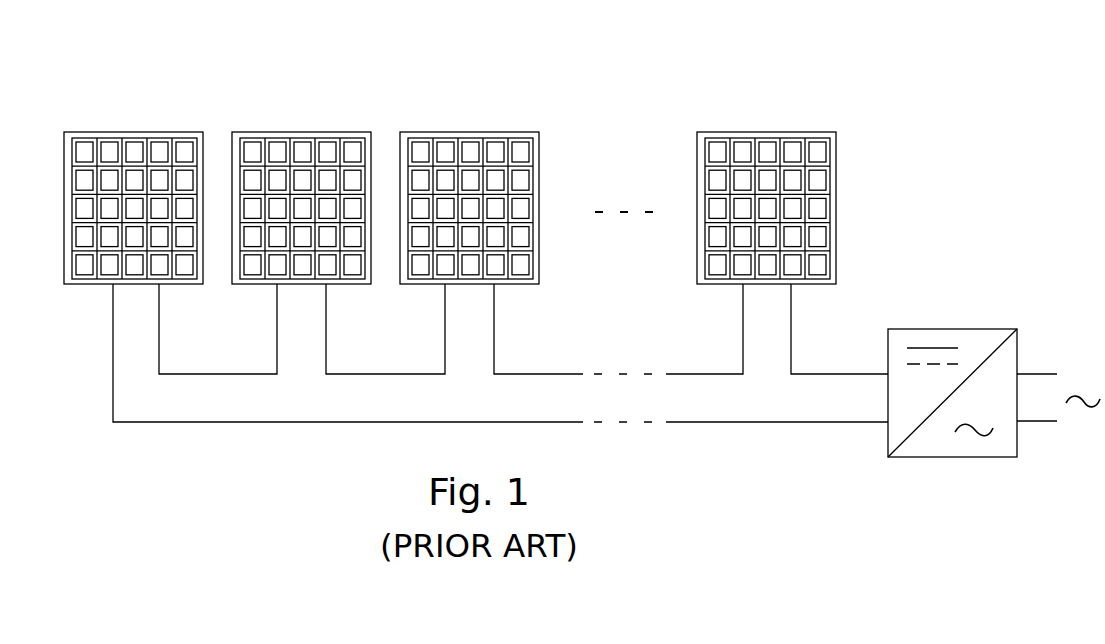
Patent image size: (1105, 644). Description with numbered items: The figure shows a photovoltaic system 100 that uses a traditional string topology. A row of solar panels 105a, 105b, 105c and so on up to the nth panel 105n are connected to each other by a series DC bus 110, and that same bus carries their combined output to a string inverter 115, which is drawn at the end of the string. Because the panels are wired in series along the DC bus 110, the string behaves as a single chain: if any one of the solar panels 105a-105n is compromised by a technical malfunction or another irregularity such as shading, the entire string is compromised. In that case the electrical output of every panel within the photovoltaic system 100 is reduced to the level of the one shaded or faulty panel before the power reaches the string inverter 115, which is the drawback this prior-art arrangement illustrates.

The photovoltaic system 100 is at (90, 42).
The solar panel 105a is at (164, 132).
The solar panel 105b is at (338, 132).
The solar panel 105c is at (518, 132).
The solar panel 105n is at (815, 132).
The series DC bus 110 is at (256, 422).
The string inverter 115 is at (978, 329).